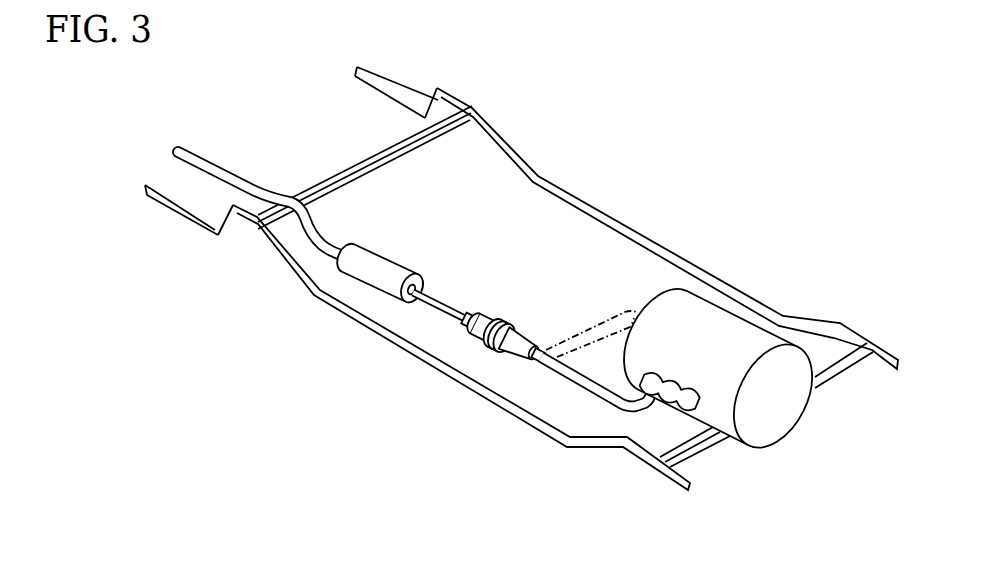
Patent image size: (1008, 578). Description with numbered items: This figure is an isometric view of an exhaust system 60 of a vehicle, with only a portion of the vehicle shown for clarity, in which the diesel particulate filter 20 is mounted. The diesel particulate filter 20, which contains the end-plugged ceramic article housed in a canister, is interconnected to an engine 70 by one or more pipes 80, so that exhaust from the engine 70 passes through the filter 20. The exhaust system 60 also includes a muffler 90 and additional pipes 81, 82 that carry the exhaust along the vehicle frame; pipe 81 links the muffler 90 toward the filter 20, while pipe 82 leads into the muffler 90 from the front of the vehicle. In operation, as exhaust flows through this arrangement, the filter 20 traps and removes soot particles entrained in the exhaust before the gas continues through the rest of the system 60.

The exhaust system 60 is at (278, 457).
The additional pipe 82 is at (213, 168).
The muffler 90 is at (381, 270).
The additional pipe 81 is at (418, 302).
The diesel particulate filter 20 is at (487, 335).
The pipe 80 is at (593, 390).
The engine 70 is at (710, 332).